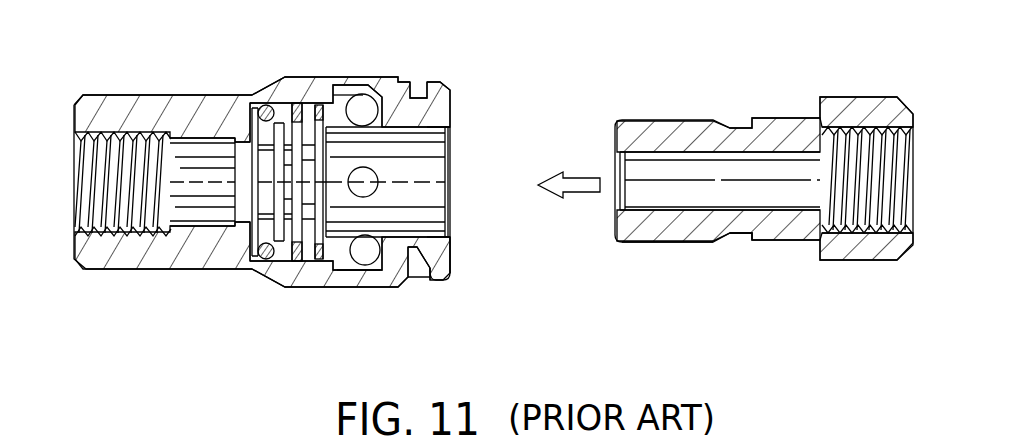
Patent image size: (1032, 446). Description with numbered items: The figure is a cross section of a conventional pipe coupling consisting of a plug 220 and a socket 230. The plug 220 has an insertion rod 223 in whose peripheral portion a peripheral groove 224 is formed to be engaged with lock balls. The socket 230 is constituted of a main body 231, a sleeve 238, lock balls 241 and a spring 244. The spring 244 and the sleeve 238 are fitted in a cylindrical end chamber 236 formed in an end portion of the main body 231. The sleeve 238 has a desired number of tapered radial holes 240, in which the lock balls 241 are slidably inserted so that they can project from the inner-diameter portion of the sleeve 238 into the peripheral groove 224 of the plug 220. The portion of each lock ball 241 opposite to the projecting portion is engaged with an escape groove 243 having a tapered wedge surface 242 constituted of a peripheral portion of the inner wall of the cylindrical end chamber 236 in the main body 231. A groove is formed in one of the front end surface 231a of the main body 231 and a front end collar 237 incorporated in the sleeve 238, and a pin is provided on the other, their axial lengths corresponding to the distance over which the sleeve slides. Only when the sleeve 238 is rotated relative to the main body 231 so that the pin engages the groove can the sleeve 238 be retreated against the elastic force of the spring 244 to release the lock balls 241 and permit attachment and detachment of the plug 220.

The plug 220 is at (843, 89).
The insertion rod 223 is at (652, 237).
The peripheral groove 224 is at (735, 235).
The socket 230 is at (110, 91).
The main body 231 is at (157, 100).
The front end surface 231a is at (412, 96).
The cylindrical end chamber 236 is at (308, 240).
The front end collar 237 is at (438, 258).
The sleeve 238 is at (414, 98).
The tapered radial holes 240 is at (380, 232).
The lock balls 241 is at (355, 97).
The tapered wedge surface 242 is at (413, 250).
The escape groove 243 is at (388, 275).
The spring 244 is at (272, 103).